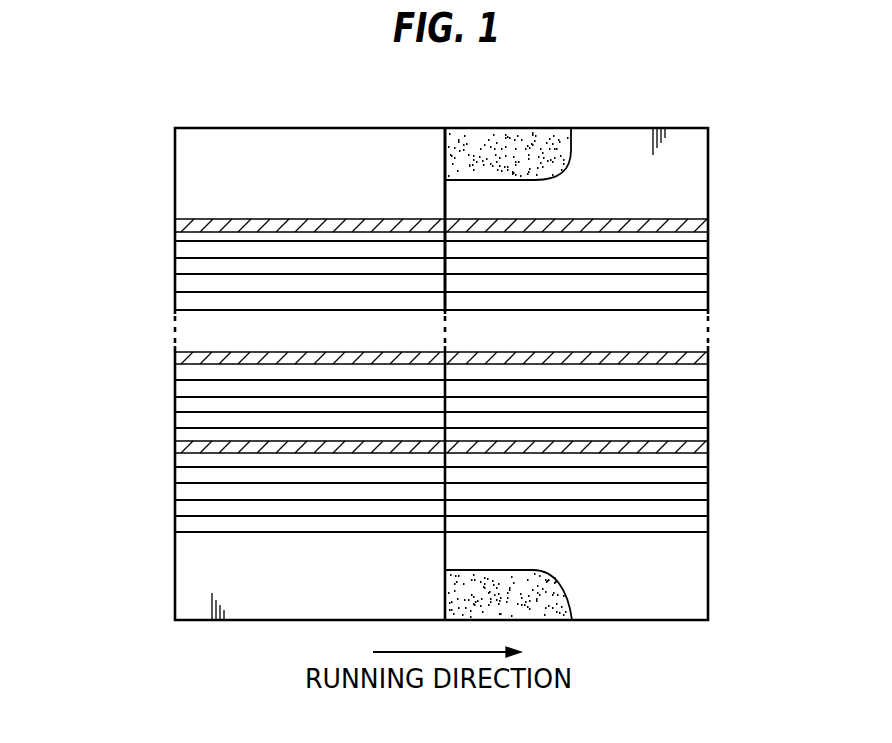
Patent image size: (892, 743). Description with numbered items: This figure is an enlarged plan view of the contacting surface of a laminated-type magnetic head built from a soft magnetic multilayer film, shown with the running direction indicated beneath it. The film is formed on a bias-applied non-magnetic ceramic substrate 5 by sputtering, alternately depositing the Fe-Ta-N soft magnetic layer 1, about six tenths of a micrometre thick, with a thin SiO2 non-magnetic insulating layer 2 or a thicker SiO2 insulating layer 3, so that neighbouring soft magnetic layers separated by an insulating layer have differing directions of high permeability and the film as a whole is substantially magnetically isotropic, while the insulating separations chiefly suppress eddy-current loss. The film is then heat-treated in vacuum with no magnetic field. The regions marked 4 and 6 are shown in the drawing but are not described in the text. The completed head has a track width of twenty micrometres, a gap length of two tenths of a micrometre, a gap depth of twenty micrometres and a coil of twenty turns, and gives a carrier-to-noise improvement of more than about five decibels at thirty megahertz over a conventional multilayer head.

The soft magnetic layer 1 is at (182, 302).
The non-magnetic insulating layer 2 is at (708, 467).
The insulating layer 3 is at (708, 232).
The blank margin regions 4 is at (193, 178).
The substrate 5 is at (479, 154).
The center line 6 is at (444, 252).